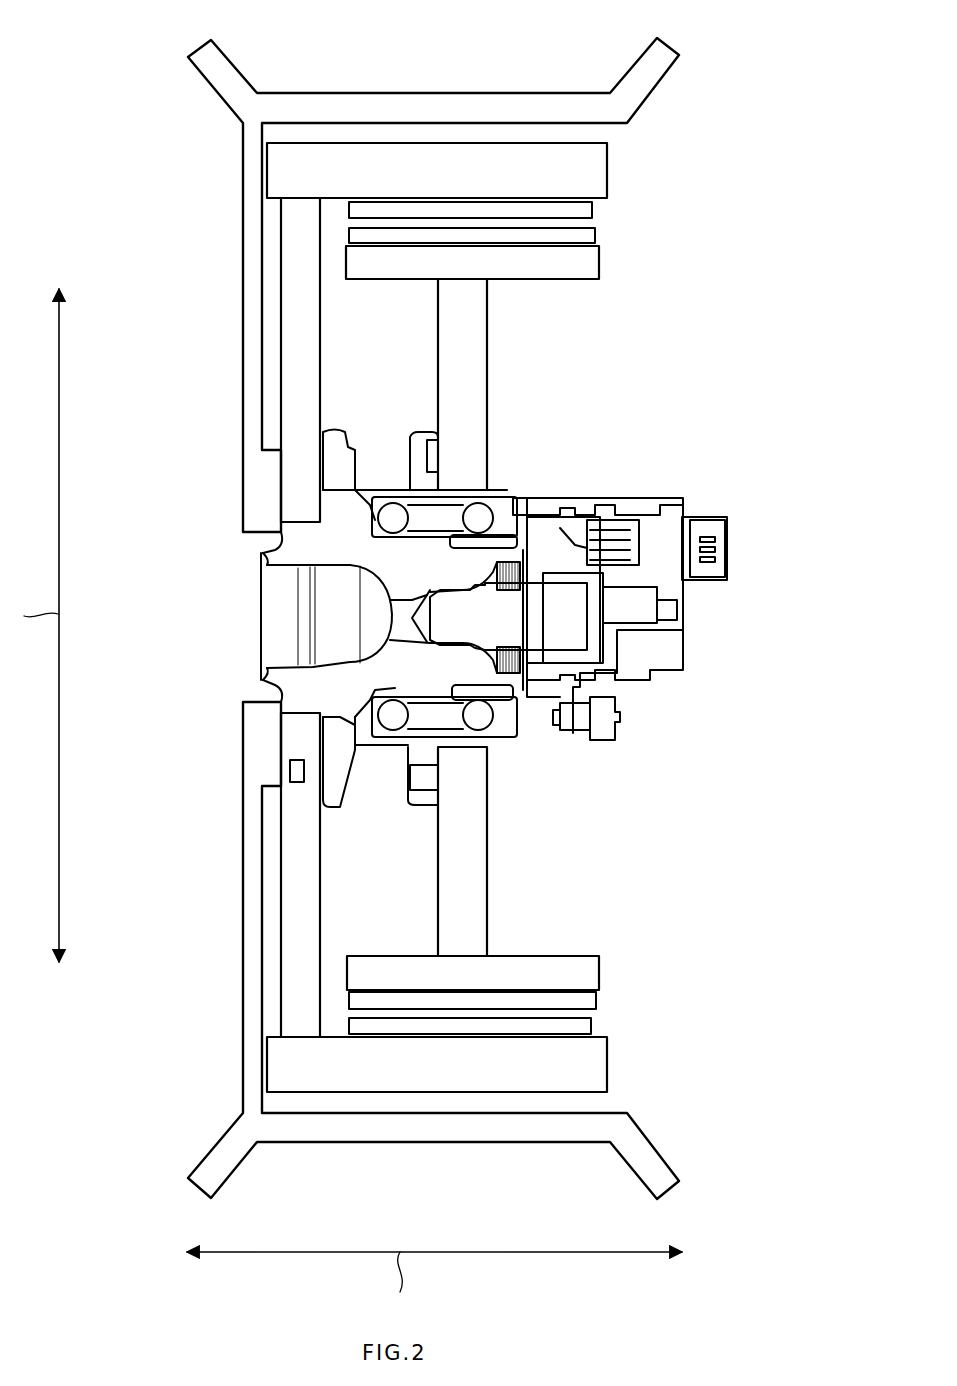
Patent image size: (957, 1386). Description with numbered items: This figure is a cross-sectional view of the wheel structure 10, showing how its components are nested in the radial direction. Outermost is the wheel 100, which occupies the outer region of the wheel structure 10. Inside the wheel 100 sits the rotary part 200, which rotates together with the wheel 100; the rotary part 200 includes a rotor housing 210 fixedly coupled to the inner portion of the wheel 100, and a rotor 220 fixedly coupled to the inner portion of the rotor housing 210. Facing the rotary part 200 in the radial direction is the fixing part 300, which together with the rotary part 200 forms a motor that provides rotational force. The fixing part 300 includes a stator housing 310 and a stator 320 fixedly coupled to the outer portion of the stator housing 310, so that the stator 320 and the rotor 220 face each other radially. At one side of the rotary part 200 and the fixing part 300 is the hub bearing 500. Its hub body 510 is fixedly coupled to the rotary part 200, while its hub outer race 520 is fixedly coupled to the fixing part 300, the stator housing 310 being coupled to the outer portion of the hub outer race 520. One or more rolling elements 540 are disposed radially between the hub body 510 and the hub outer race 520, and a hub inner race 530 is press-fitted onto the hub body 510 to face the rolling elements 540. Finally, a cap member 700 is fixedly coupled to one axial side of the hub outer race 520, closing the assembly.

The wheel structure 10 is at (151, 29).
The wheel 100 is at (463, 105).
The rotary part 200 is at (622, 165).
The rotor housing 210 is at (560, 153).
The rotor 220 is at (585, 212).
The fixing part 300 is at (557, 367).
The stator housing 310 is at (590, 265).
The stator 320 is at (592, 237).
The hub bearing 500 is at (255, 647).
The hub body 510 is at (385, 563).
The hub outer race 520 is at (410, 737).
The hub inner race 530 is at (497, 533).
The rolling elements 540 is at (395, 515).
The cap member 700 is at (735, 522).